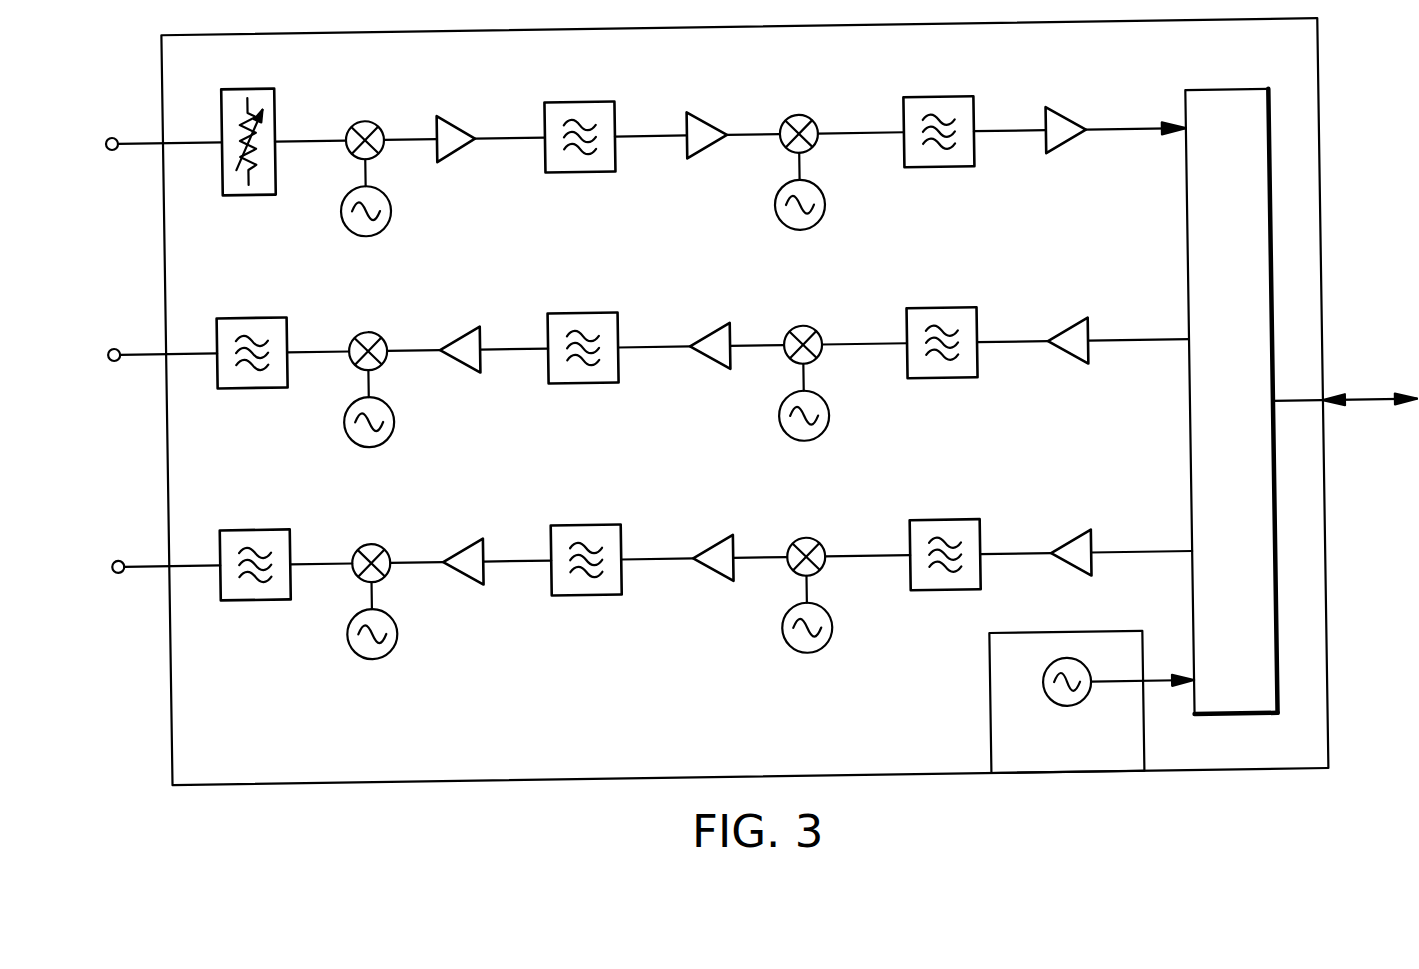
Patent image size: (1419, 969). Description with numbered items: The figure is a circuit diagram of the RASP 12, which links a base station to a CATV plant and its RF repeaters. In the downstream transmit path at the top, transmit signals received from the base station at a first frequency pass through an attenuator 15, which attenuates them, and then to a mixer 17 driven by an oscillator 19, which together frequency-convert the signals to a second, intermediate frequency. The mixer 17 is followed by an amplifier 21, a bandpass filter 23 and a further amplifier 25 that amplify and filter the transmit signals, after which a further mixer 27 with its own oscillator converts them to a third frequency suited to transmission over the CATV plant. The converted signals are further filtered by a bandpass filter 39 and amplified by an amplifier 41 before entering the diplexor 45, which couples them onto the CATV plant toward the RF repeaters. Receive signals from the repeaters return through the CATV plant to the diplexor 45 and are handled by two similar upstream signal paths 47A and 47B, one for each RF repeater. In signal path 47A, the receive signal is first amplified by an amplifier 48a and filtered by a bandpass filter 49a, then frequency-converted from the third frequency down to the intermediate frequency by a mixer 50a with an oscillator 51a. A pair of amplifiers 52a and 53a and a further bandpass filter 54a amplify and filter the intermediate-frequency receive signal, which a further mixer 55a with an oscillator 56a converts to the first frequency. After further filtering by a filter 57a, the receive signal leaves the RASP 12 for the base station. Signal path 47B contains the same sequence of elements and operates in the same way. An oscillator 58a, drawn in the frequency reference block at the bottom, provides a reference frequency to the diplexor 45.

The RASP 12 is at (1306, 241).
The attenuator 15 is at (241, 199).
The mixer 17 is at (363, 123).
The oscillator 19 is at (344, 223).
The amplifier 21 is at (449, 120).
The bandpass filter 23 is at (583, 107).
The further amplifier 25 is at (706, 121).
The further mixer 27 is at (799, 122).
The bandpass filter 39 is at (936, 107).
The amplifier 41 is at (1069, 121).
The diplexor 45 is at (1199, 243).
The signal path 47A is at (1021, 278).
The signal path 47B is at (1038, 502).
The amplifier 48a is at (1070, 336).
The bandpass filter 49a is at (946, 317).
The mixer 50a is at (798, 334).
The oscillator 51a is at (824, 441).
The amplifier 52a is at (710, 334).
The amplifier 53a is at (463, 335).
The further bandpass filter 54a is at (588, 319).
The further mixer 55a is at (367, 334).
The oscillator 56a is at (341, 438).
The filter 57a is at (234, 395).
The oscillator 58a is at (1035, 696).